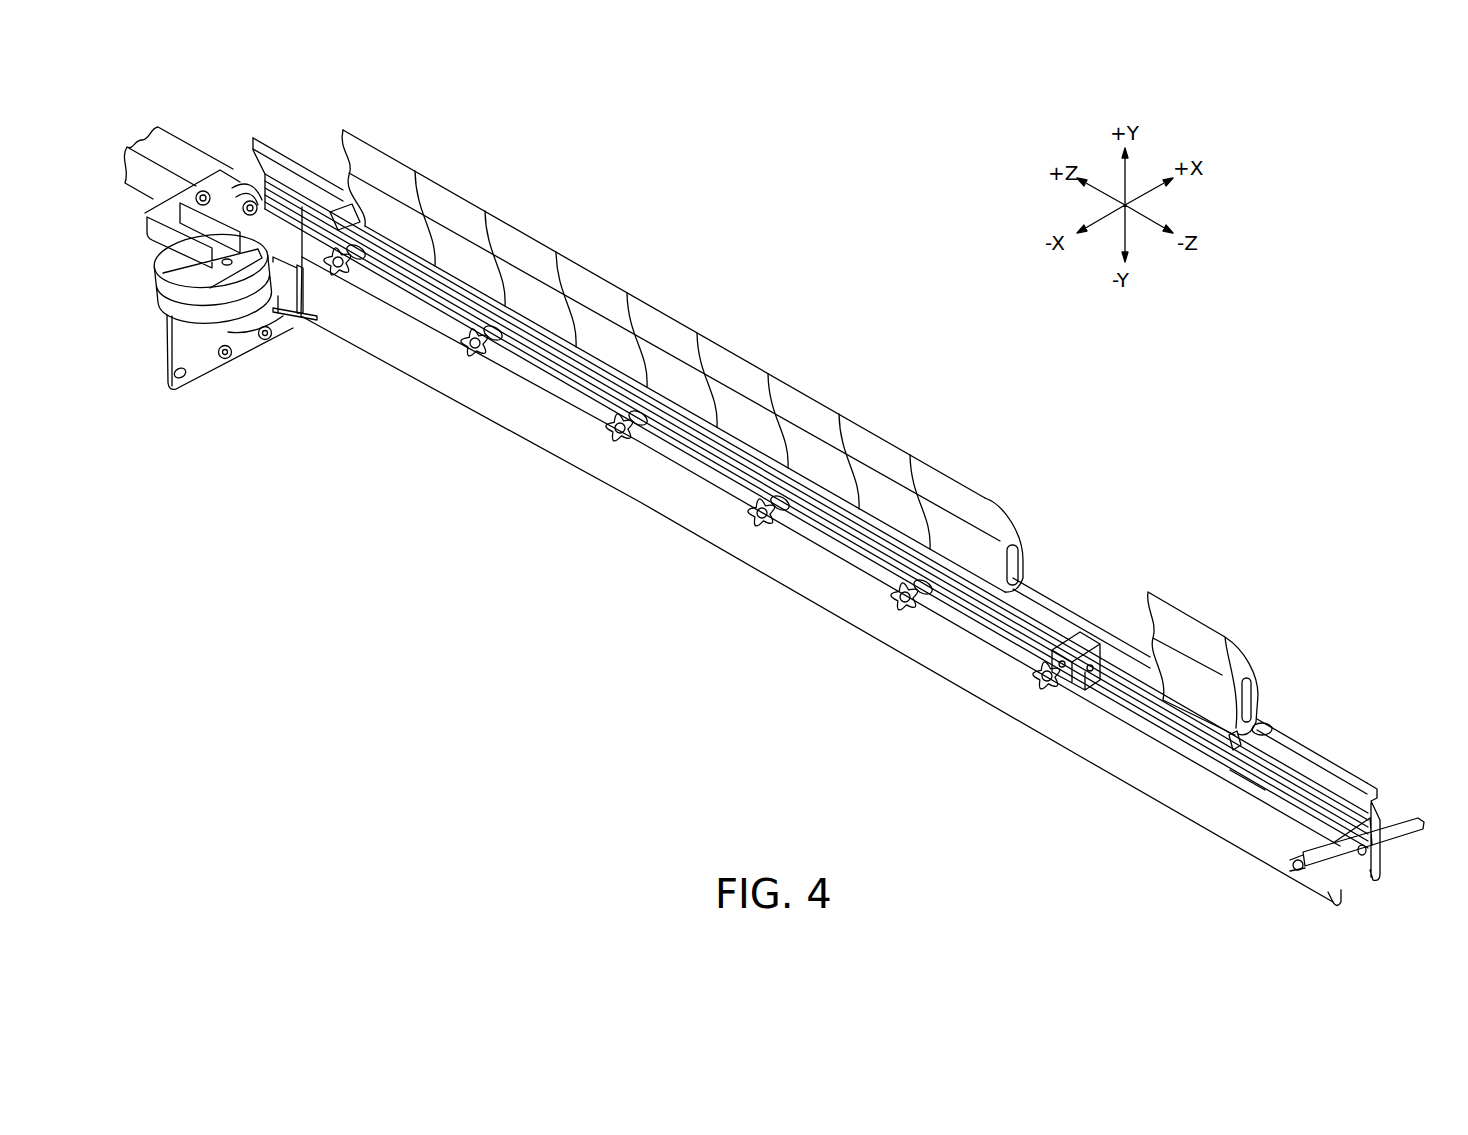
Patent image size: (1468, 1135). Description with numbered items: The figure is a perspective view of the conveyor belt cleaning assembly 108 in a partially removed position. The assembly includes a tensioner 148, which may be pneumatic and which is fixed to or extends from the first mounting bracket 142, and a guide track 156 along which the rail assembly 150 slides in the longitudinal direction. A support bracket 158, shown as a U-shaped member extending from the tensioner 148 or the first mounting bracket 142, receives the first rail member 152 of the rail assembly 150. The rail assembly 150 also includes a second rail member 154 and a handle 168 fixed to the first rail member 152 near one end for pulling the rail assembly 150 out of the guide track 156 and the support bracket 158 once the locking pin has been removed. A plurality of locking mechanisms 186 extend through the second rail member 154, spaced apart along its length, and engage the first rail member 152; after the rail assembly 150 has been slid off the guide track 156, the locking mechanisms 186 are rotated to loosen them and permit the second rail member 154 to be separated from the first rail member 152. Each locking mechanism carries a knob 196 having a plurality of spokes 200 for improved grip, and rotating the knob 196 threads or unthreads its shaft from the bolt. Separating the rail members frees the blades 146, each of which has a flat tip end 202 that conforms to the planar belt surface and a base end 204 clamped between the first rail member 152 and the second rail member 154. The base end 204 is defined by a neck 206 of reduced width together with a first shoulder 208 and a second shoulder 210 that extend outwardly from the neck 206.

The conveyor belt cleaning assembly 108 is at (385, 640).
The first mounting bracket 142 is at (195, 375).
The blades 146 is at (948, 494).
The tensioner 148 is at (160, 284).
The rail assembly 150 is at (592, 606).
The first rail member 152 is at (1362, 757).
The second rail member 154 is at (428, 338).
The guide track 156 is at (178, 140).
The support bracket 158 is at (298, 292).
The handle 168 is at (1383, 850).
The locking mechanisms 186 is at (762, 538).
The knob 196 is at (1038, 677).
The spokes 200 is at (1052, 648).
The tip end 202 is at (1158, 594).
The base end 204 is at (1247, 772).
The neck 206 is at (1262, 722).
The first shoulder 208 is at (1272, 728).
The second shoulder 210 is at (1212, 748).